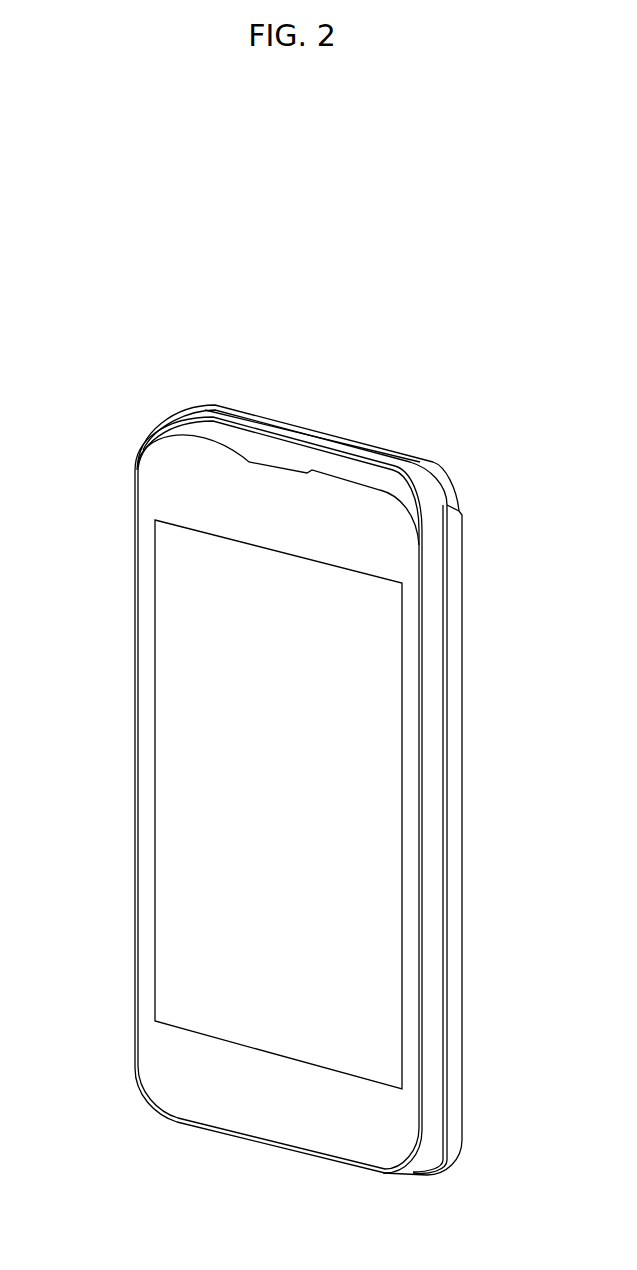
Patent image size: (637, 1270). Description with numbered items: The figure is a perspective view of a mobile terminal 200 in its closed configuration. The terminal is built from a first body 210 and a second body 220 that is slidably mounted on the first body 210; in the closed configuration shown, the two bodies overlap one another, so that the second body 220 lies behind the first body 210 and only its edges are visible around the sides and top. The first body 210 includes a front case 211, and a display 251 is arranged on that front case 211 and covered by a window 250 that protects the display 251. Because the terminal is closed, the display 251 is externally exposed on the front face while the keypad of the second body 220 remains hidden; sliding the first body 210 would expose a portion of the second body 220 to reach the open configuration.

The mobile terminal 200 is at (137, 320).
The first body 210 is at (136, 424).
The front case 211 is at (216, 438).
The second body 220 is at (392, 430).
The window 250 is at (157, 499).
The display 251 is at (377, 862).